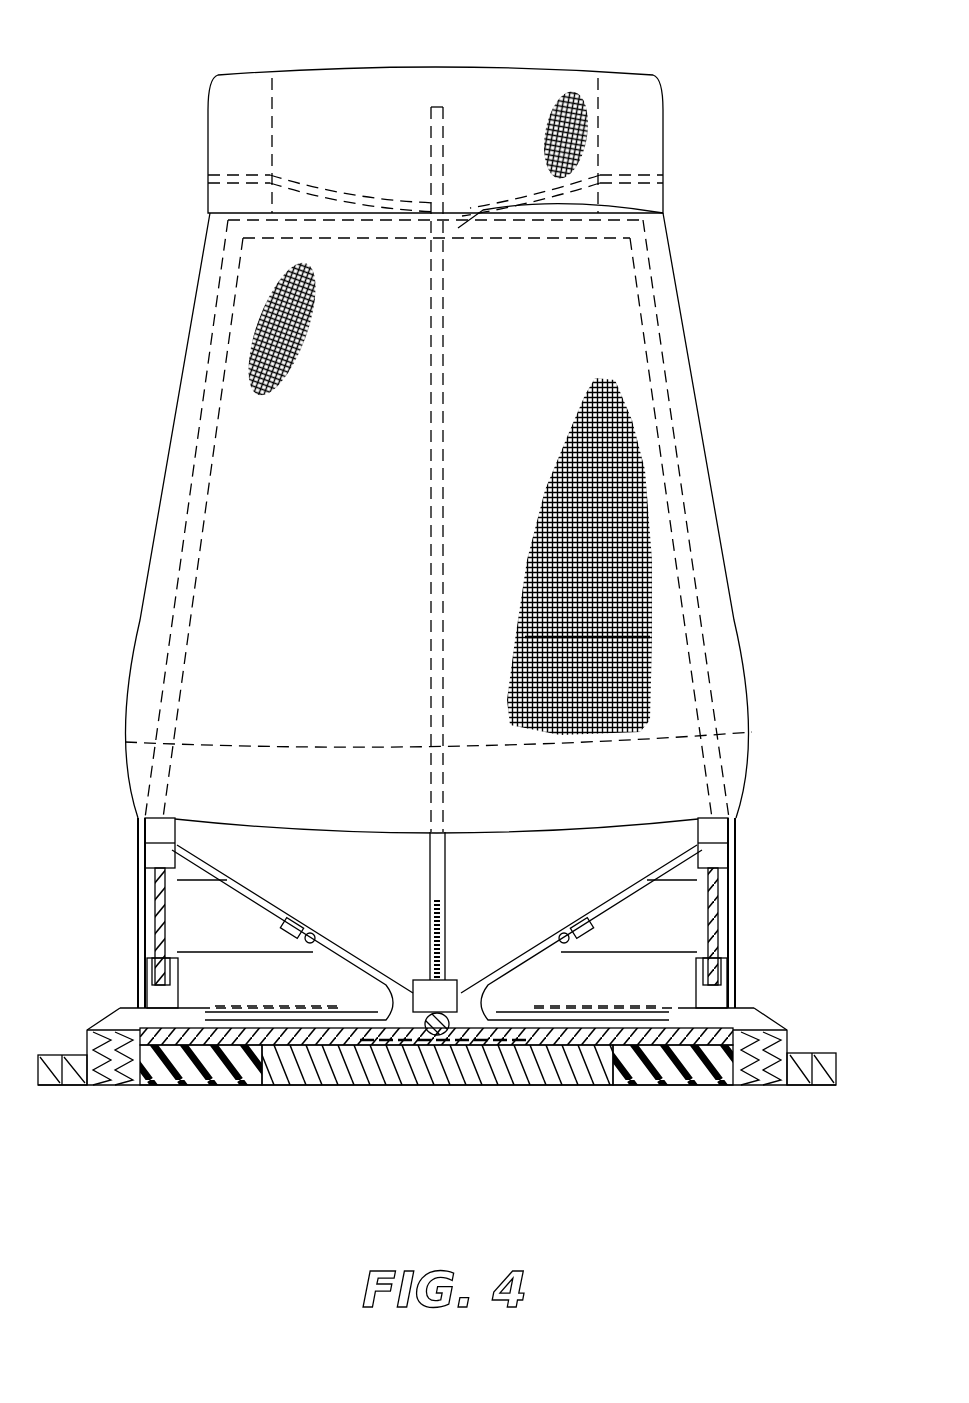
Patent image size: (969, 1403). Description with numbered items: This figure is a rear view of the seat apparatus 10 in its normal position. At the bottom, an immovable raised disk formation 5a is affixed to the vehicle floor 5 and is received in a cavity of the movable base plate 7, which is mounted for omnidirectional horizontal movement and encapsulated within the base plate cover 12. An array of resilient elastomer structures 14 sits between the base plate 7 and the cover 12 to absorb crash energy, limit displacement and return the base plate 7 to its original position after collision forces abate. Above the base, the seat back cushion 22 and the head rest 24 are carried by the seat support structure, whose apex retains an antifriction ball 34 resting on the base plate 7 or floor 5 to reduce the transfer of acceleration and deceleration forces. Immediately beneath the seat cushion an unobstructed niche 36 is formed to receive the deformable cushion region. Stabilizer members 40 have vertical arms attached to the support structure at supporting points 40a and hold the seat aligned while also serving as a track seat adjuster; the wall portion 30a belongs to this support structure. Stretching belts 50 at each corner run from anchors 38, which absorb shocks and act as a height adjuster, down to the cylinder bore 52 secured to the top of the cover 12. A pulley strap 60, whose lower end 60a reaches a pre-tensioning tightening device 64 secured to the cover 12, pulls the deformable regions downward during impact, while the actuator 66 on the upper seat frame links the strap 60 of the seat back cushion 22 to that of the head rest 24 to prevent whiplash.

The seat apparatus 10 is at (103, 148).
The head rest 24 is at (522, 122).
The actuator 66 is at (663, 213).
The seat back cushion 22 is at (371, 440).
The pulley strap 60 is at (441, 410).
The anchor 38 is at (145, 825).
The housing wall 30a is at (177, 880).
The stretching belt 50 is at (722, 922).
The stabilizer member 40 is at (155, 960).
The supporting point 40a is at (312, 932).
The niche 36 is at (384, 894).
The rod lower end 60a is at (443, 872).
The tightening device 64 is at (447, 997).
The antifriction ball 34 is at (428, 1035).
The cylinder bore 52 is at (147, 970).
The base plate cover 12 is at (120, 1008).
The resilient elastomer structure 14 is at (87, 1085).
The base plate 7 is at (133, 1080).
The raised disk formation 5a is at (520, 1083).
The vehicle floor 5 is at (45, 1082).